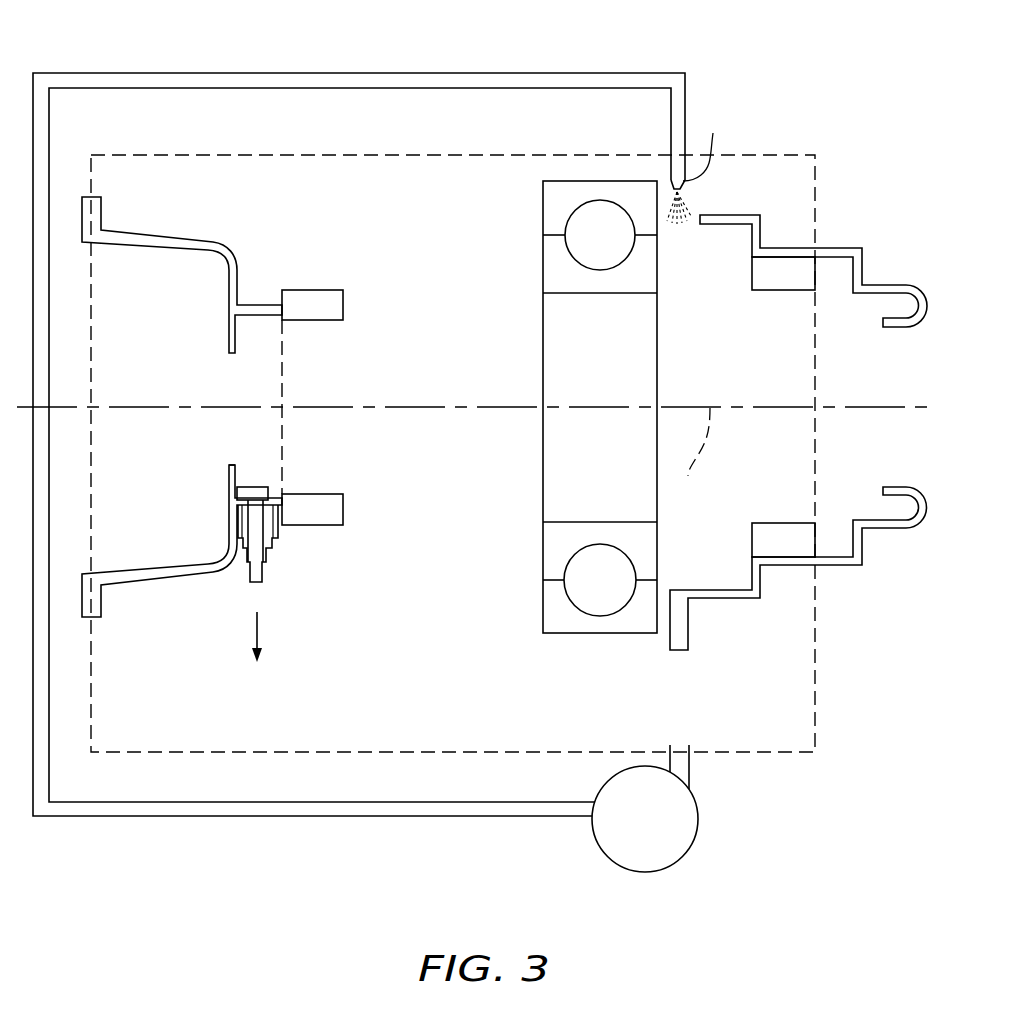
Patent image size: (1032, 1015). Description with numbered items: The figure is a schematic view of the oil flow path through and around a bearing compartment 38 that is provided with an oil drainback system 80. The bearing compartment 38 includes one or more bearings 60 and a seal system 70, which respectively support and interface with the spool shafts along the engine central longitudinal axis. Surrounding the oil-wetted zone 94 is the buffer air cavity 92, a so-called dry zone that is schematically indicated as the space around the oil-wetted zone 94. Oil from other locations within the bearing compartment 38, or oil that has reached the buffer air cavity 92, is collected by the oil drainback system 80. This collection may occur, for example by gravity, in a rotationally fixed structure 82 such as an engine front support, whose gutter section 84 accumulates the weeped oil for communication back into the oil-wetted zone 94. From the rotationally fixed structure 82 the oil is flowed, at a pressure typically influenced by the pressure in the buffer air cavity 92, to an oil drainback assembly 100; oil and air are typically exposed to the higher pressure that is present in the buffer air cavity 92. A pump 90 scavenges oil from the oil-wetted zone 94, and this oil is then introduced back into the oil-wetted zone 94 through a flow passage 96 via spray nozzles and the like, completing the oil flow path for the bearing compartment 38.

The bearing compartment 38 is at (769, 80).
The bearing 60 is at (556, 218).
The seal system 70 is at (311, 300).
The oil drainback system 80 is at (324, 477).
The rotationally fixed structure 82 is at (90, 576).
The gutter section 84 is at (255, 490).
The pump 90 is at (628, 827).
The buffer air cavity 92 is at (221, 137).
The oil-wetted zone 94 is at (815, 700).
The flow passage 96 is at (271, 817).
The oil drainback assembly 100 is at (295, 472).